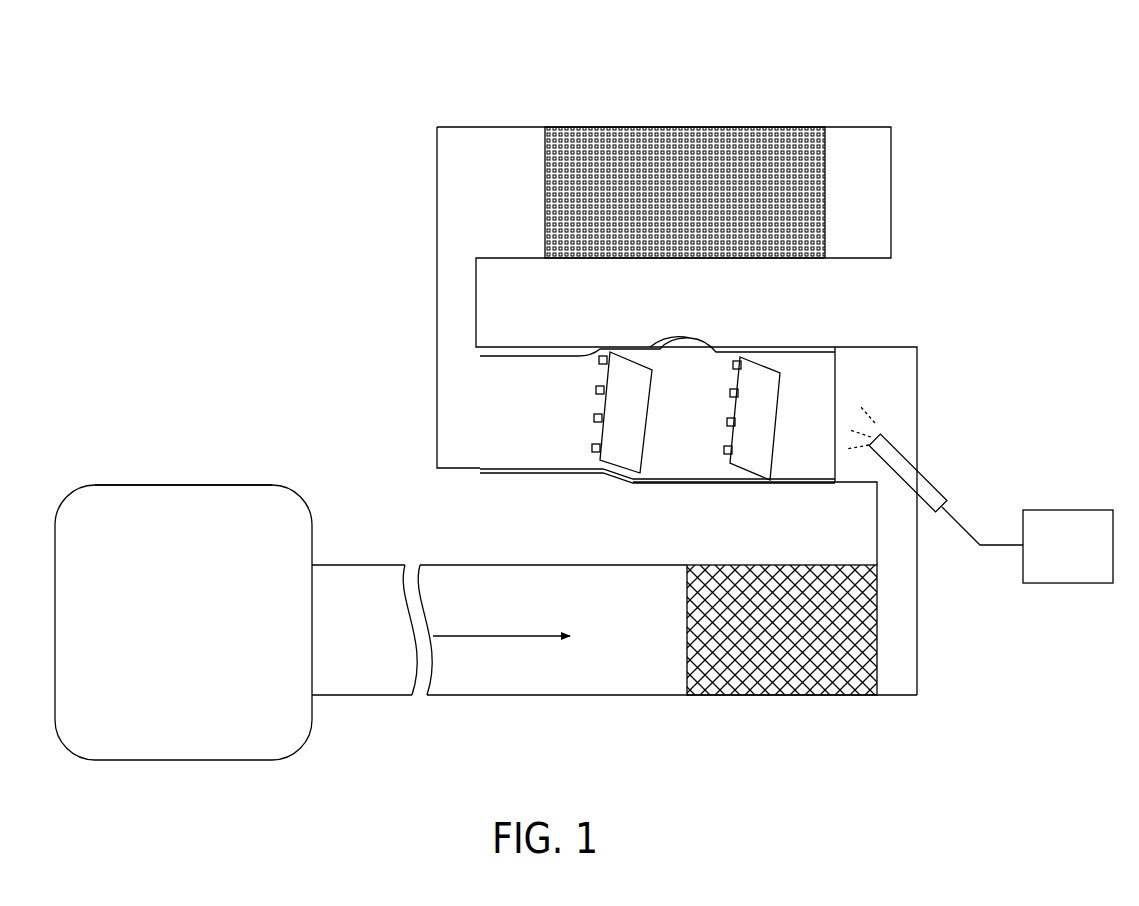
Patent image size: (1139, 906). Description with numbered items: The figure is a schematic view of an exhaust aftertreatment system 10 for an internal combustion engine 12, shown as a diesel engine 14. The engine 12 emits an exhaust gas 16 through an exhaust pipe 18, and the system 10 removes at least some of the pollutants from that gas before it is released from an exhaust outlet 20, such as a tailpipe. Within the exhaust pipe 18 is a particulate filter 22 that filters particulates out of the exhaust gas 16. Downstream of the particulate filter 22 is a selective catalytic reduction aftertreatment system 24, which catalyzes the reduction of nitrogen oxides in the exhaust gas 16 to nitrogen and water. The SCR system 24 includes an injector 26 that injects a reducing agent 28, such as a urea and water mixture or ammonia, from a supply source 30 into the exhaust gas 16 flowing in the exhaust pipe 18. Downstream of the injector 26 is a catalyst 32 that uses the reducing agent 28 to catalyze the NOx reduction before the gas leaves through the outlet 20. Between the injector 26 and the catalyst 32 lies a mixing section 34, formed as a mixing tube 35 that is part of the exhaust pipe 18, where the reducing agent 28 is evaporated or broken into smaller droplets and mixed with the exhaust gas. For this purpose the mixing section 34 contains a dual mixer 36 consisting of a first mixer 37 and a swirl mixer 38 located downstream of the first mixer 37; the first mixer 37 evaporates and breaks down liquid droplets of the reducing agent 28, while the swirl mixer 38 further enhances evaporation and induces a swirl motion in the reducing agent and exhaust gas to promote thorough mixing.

The exhaust aftertreatment system 10 is at (970, 100).
The internal combustion engine 12 is at (128, 485).
The diesel engine 14 is at (215, 485).
The exhaust gas 16 is at (505, 636).
The exhaust pipe 18 is at (558, 695).
The exhaust outlet 20 is at (891, 192).
The particulate filter 22 is at (790, 695).
The selective catalytic reduction (SCR) aftertreatment system 24 is at (318, 193).
The injector 26 is at (900, 450).
The reducing agent 28 is at (873, 422).
The supply source 30 is at (1068, 510).
The catalyst 32 is at (657, 127).
The mixing section 34 is at (542, 472).
The mixing tube 35 is at (552, 473).
The dual mixer 36 is at (664, 509).
The first mixer 37 is at (760, 360).
The swirl mixer 38 is at (627, 357).